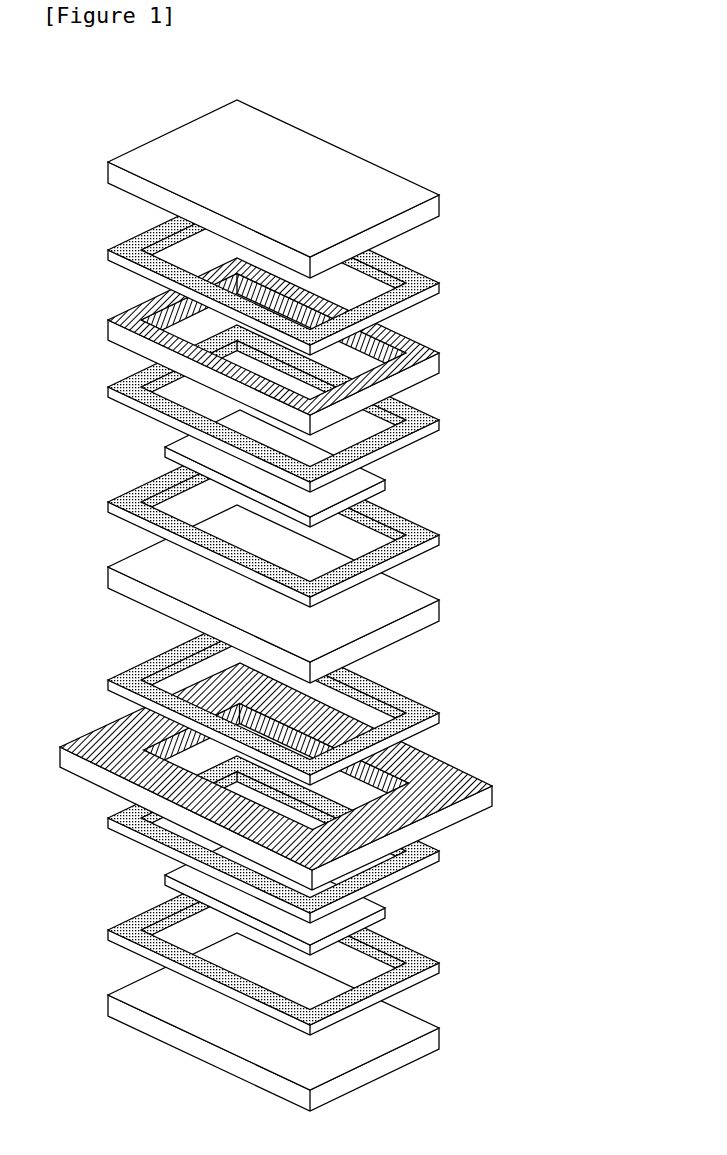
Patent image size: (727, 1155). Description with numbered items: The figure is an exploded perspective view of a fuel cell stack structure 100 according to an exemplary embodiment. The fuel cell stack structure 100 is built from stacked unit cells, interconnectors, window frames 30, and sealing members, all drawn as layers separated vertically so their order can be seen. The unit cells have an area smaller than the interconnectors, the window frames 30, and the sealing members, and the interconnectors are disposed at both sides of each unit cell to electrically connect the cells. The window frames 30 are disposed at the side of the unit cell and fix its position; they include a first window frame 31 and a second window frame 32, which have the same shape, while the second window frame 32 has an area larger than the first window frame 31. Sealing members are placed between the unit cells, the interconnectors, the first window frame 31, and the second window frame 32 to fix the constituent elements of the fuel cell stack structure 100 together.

The fuel cell stack structure 100 is at (98, 75).
The window frame 30 is at (343, 613).
The first window frame 31 is at (413, 340).
The second window frame 32 is at (311, 776).